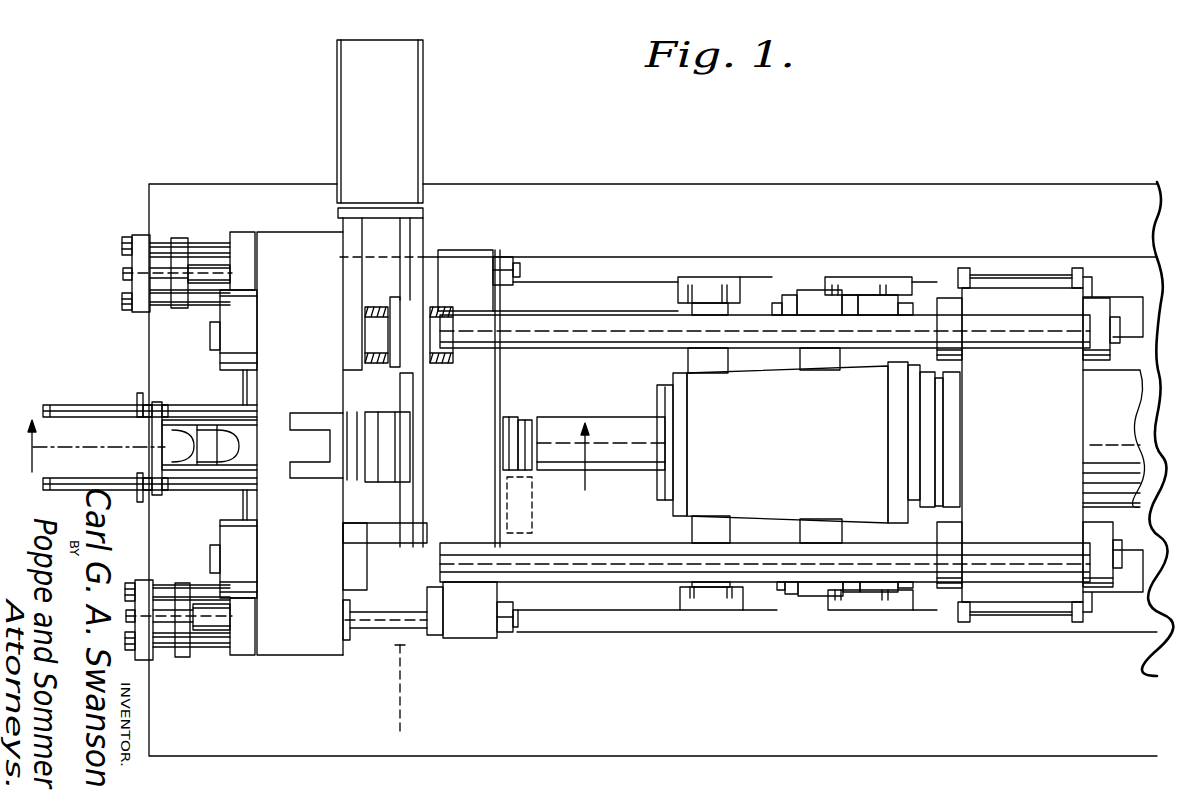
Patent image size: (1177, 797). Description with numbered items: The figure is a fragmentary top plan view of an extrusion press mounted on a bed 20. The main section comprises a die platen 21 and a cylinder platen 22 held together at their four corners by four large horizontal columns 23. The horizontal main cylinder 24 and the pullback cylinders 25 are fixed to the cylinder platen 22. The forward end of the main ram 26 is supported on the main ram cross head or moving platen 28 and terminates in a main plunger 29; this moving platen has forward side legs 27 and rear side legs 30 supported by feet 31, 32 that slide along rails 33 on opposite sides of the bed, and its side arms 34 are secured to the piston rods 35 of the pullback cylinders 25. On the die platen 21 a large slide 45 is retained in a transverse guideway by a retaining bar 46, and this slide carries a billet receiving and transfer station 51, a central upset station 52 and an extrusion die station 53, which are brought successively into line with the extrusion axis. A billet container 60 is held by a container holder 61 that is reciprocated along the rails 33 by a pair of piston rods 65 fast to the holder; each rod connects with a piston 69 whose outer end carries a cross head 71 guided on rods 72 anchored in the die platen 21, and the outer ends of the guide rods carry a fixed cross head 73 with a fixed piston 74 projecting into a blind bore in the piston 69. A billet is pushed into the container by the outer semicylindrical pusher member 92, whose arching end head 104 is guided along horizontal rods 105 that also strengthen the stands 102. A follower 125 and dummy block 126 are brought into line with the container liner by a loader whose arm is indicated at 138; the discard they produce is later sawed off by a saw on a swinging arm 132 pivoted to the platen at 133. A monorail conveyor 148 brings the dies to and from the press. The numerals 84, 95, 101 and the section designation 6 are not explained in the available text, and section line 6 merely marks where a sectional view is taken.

The bed 20 is at (988, 186).
The die platen 21 is at (280, 229).
The cylinder platen 22 is at (1044, 368).
The horizontal columns 23 is at (638, 320).
The main cylinder 24 is at (1110, 422).
The pullback cylinders 25 is at (1125, 294).
The main ram 26 is at (656, 404).
The forward side legs 27 is at (708, 382).
The main ram cross head 28 is at (856, 422).
The main plunger 29 is at (614, 426).
The rear side legs 30 is at (812, 370).
The feet 31 is at (712, 292).
The feet 32 is at (881, 284).
The rails 33 is at (792, 282).
The side arms 34 is at (836, 288).
The piston rods 35 is at (862, 264).
The slide 45 is at (372, 514).
The retaining bar 46 is at (352, 500).
The billet receiving and transfer station 51 is at (384, 210).
The upset station 52 is at (408, 374).
The extrusion die station 53 is at (408, 447).
The billet container 60 is at (504, 382).
The container holder 61 is at (472, 638).
The piston rods 65 is at (516, 260).
The piston 69 is at (207, 243).
The cross head 71 is at (184, 236).
The guide rods 72 is at (165, 238).
The fixed cross head 73 is at (140, 232).
The fixed piston 74 is at (123, 273).
The magazine 84 is at (421, 69).
The pusher member 92 is at (208, 442).
The flange 95 is at (264, 424).
The rod 101 is at (64, 413).
The stand 102 is at (138, 389).
The end head 104 is at (158, 444).
The horizontal rod 105 is at (160, 400).
The follower 125 is at (510, 415).
The dummy block 126 is at (526, 418).
The swinging arm 132 is at (369, 308).
The pivot 133 is at (366, 340).
The loader arm 138 is at (532, 514).
The monorail conveyor 148 is at (398, 715).
The section line 6 is at (301, 464).